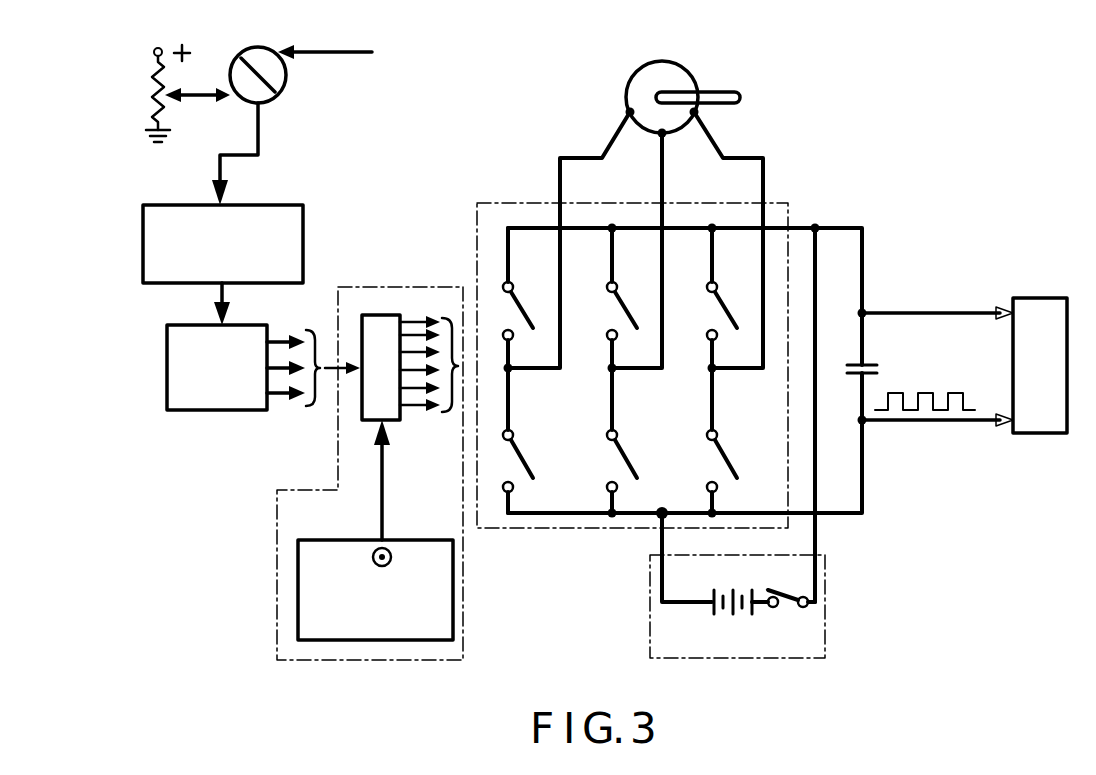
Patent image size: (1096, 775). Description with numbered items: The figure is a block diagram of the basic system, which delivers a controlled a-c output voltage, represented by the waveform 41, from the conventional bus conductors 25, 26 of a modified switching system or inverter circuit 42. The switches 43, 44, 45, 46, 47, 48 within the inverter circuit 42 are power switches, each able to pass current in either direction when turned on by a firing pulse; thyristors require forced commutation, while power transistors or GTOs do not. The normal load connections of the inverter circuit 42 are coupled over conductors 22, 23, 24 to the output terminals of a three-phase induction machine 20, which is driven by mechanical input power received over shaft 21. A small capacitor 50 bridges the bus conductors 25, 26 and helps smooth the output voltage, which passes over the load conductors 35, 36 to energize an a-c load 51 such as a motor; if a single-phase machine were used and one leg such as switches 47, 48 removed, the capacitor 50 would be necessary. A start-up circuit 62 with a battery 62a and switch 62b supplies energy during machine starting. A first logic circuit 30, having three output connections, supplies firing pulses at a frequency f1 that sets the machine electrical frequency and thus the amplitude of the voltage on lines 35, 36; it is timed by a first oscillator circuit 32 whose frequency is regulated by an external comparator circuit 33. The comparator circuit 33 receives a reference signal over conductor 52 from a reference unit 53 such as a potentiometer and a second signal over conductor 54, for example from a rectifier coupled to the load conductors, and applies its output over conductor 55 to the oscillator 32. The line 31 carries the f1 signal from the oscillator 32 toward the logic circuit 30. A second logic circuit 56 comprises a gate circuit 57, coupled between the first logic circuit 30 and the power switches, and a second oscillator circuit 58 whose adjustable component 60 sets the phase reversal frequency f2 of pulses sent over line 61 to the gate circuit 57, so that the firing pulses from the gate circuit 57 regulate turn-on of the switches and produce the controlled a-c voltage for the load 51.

The induction machine 20 is at (627, 91).
The shaft 21 is at (738, 84).
The conductor 22 is at (560, 185).
The conductor 23 is at (662, 185).
The conductor 24 is at (763, 185).
The bus conductor 25 is at (843, 226).
The bus conductor 26 is at (845, 516).
The first logic circuit 30 is at (220, 410).
The frequency signal line f1 31 is at (190, 300).
The first oscillator circuit 32 is at (304, 222).
The comparator circuit 33 is at (316, 92).
The load conductor 35 is at (905, 311).
The load conductor 36 is at (907, 424).
The waveform 41 is at (1002, 409).
The inverter circuit 42 is at (492, 203).
The power switch 43 is at (529, 300).
The power switch 44 is at (530, 440).
The power switch 45 is at (633, 300).
The power switch 46 is at (634, 440).
The power switch 47 is at (733, 300).
The power switch 48 is at (733, 440).
The capacitor 50 is at (847, 364).
The a-c load 51 is at (1040, 298).
The conductor 52 is at (207, 97).
The reference unit 53 is at (167, 108).
The conductor 54 is at (350, 54).
The conductor 55 is at (259, 140).
The second logic circuit 56 is at (463, 634).
The gate circuit 57 is at (426, 313).
The second oscillator circuit 58 is at (345, 540).
The adjustable component 60 is at (392, 557).
The line 61 is at (383, 510).
The start-up circuit 62 is at (826, 633).
The battery 62a is at (728, 612).
The switch 62b is at (786, 606).